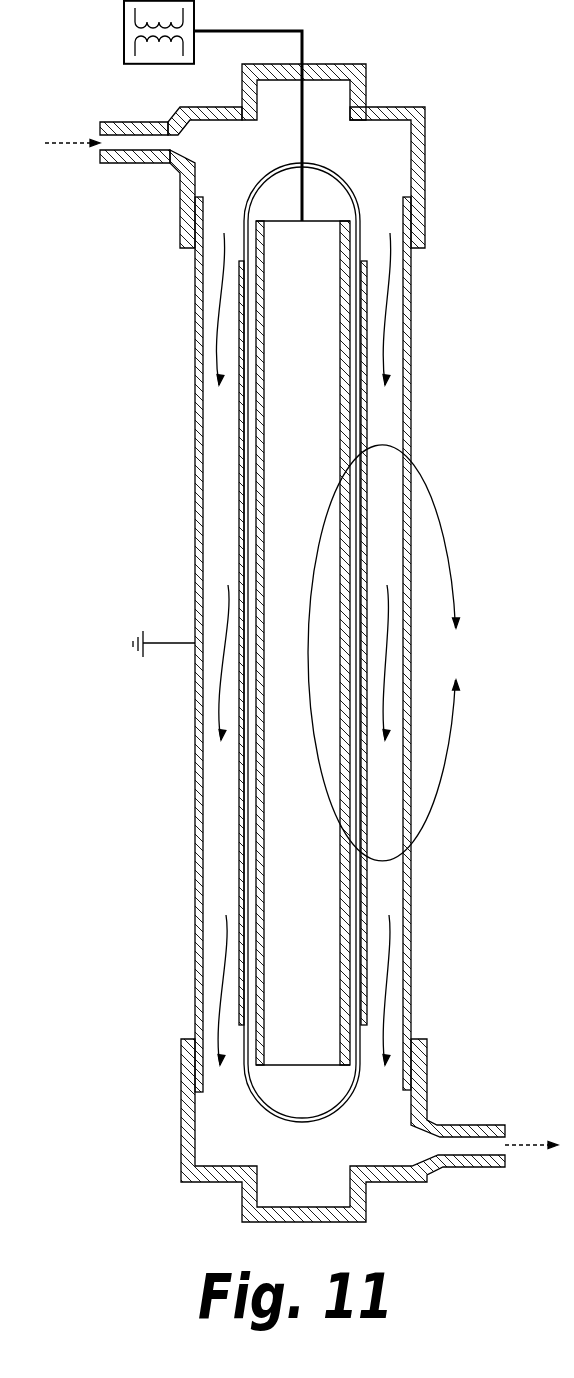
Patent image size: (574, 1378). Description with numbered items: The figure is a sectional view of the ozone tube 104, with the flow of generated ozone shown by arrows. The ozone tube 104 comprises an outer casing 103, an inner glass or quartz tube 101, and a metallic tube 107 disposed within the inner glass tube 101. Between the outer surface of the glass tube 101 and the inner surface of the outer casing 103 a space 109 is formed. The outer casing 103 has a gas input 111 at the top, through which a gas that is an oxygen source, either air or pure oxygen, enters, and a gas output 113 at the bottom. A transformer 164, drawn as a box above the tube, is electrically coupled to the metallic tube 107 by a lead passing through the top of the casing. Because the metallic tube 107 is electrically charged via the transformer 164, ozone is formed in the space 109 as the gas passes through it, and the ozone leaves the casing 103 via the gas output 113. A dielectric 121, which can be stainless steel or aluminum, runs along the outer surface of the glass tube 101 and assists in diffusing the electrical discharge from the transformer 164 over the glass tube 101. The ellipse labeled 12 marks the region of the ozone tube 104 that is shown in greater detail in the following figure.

The detail region of FIG. 12 is at (390, 653).
The inner glass tube 101 is at (297, 628).
The outer casing 103 is at (197, 352).
The ozone tube 104 is at (392, 93).
The metallic tube 107 is at (262, 528).
The space 109 is at (228, 445).
The gas input 111 is at (143, 160).
The gas output 113 is at (481, 1162).
The dielectric 121 is at (243, 781).
The transformer 164 is at (124, 22).